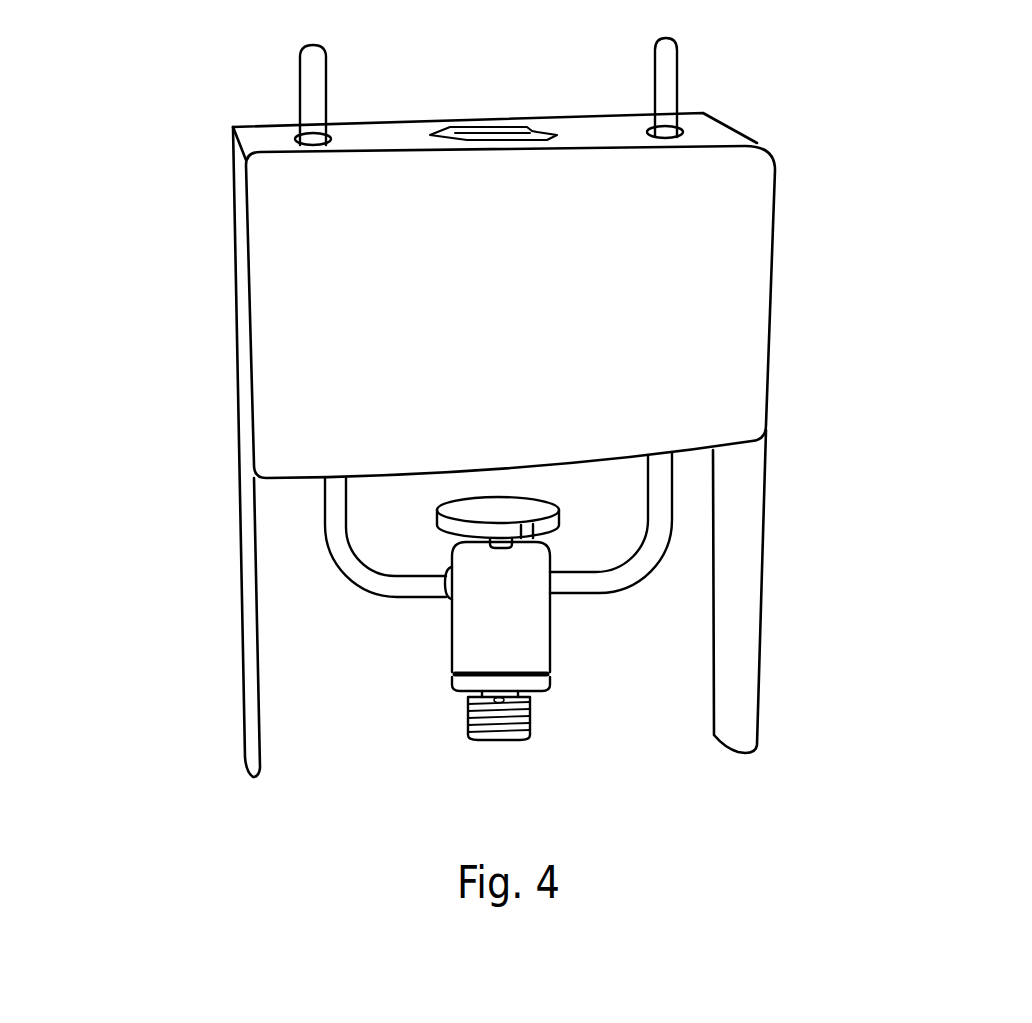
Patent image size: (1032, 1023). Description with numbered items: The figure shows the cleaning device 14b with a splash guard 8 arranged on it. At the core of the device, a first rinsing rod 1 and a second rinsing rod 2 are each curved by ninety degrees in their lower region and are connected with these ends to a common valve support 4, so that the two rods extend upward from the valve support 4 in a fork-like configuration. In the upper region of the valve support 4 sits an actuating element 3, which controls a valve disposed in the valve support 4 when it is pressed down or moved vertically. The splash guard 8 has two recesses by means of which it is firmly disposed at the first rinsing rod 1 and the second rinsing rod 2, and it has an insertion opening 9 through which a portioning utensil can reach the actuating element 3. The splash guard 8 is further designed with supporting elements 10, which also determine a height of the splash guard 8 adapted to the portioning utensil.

The first rinsing rod 1 is at (672, 57).
The second rinsing rod 2 is at (318, 70).
The actuating element 3 is at (482, 514).
The valve support 4 is at (533, 628).
The splash guard 8 is at (735, 224).
The insertion opening 9 is at (497, 134).
The supporting elements 10 is at (555, 452).
The cleaning device 14b is at (110, 30).